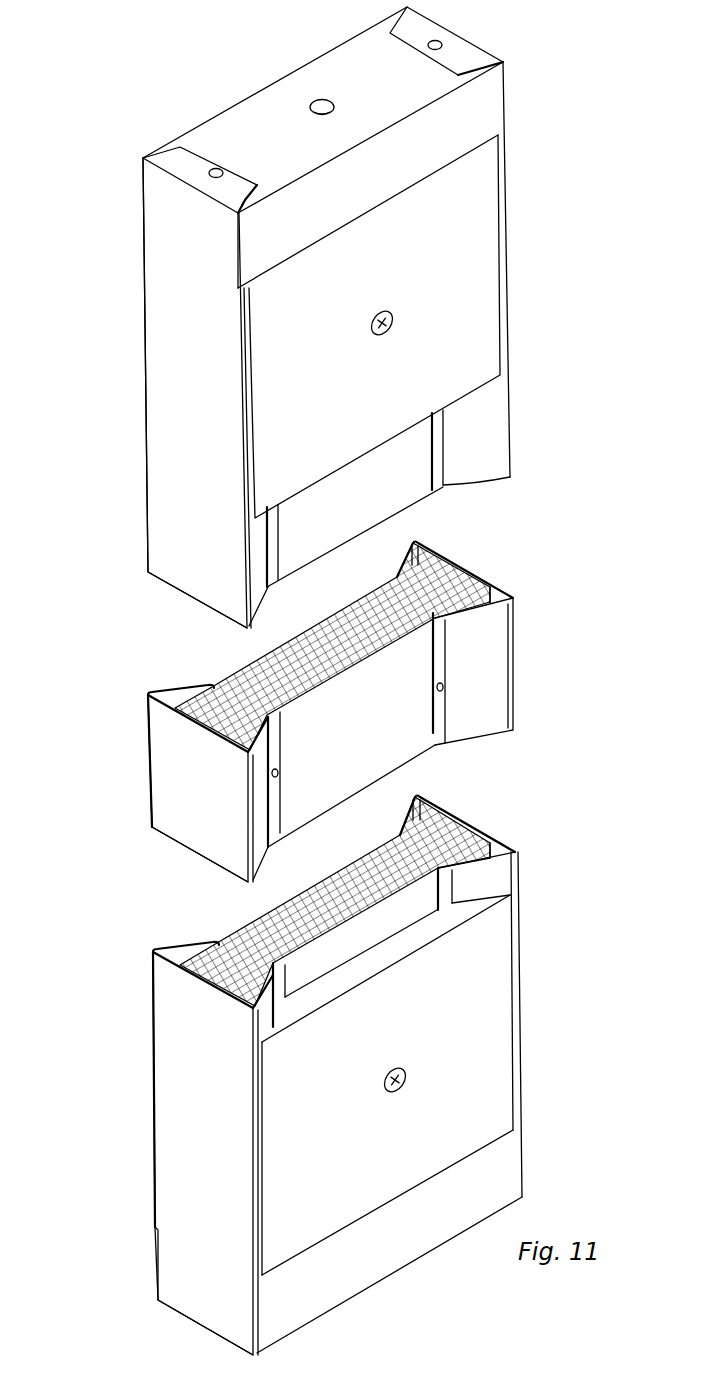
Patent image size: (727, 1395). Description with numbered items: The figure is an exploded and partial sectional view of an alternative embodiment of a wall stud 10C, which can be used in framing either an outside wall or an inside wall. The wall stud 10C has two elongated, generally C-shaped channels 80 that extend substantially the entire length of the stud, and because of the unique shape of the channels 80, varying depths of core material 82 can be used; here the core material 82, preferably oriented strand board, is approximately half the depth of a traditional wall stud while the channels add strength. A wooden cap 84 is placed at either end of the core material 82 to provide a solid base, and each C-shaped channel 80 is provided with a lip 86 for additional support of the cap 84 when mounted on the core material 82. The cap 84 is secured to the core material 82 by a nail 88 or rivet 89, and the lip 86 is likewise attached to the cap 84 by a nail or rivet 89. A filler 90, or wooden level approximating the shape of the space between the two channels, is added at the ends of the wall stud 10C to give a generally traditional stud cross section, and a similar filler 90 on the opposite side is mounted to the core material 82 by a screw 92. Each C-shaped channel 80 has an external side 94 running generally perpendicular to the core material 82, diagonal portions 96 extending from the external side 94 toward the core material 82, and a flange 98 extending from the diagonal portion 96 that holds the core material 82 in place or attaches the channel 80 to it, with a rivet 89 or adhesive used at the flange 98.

The wall stud 10C is at (120, 275).
The C-shaped channel 80 is at (331, 681).
The core material 82 is at (392, 494).
The wooden cap 84 is at (234, 120).
The lip 86 is at (480, 58).
The nail 88 is at (322, 99).
The rivet 89 is at (442, 687).
The filler 90 is at (480, 262).
The screw 92 is at (383, 333).
The external side 94 is at (206, 505).
The diagonal portion 96 is at (486, 473).
The flange 98 is at (435, 432).